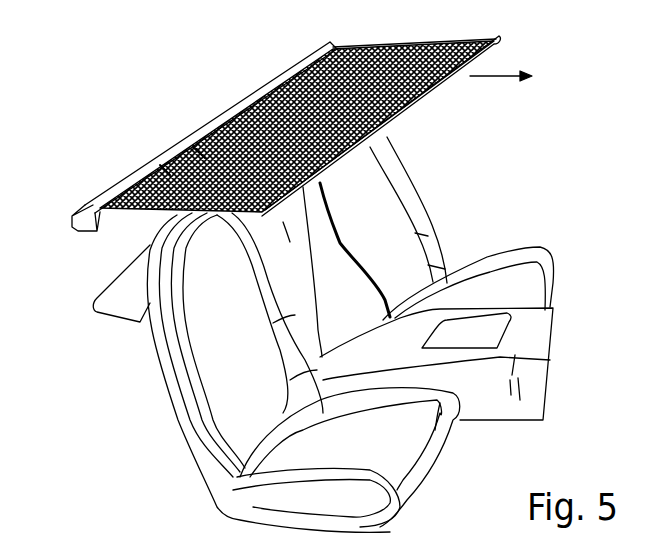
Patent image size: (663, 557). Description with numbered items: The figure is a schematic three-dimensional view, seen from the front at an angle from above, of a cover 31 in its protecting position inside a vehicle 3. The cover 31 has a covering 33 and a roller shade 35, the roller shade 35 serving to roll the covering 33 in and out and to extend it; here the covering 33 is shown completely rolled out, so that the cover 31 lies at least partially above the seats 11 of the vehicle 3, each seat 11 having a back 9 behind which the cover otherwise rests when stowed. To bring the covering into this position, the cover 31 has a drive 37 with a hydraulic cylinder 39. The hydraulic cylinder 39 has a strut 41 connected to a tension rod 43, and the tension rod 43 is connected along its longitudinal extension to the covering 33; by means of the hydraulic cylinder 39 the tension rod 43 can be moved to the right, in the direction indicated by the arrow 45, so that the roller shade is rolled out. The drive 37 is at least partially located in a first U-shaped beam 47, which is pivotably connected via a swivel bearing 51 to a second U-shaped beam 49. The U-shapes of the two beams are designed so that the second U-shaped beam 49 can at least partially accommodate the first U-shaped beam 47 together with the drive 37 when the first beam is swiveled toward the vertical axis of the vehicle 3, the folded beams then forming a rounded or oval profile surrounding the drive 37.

The vehicle 3 is at (88, 333).
The back 9 is at (202, 408).
The seat 11 is at (528, 292).
The cover 31 is at (212, 80).
The covering 33 is at (143, 215).
The roller shade 35 is at (97, 202).
The drive 37 is at (270, 78).
The hydraulic cylinder 39 is at (330, 172).
The strut 41 is at (380, 133).
The tension rod 43 is at (427, 98).
The arrow 45 is at (497, 82).
The first U-shaped beam 47 is at (289, 242).
The second U-shaped beam 49 is at (193, 147).
The swivel bearing 51 is at (160, 165).